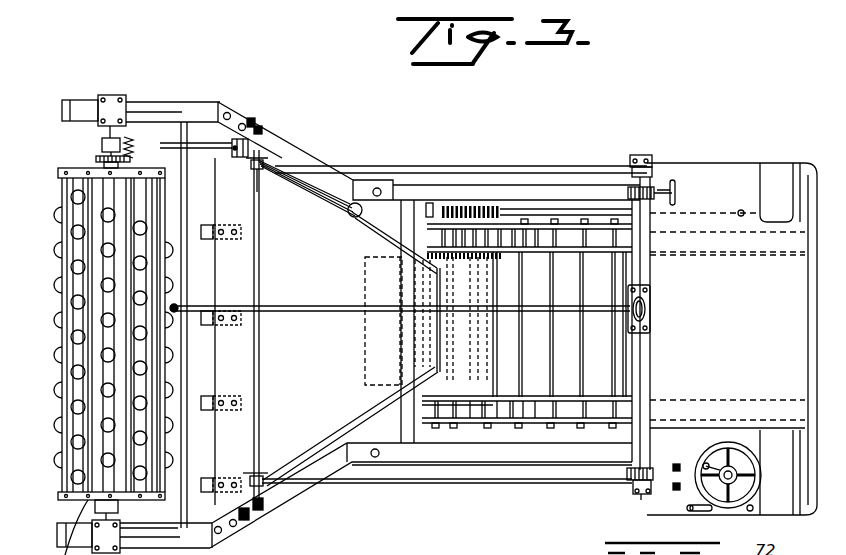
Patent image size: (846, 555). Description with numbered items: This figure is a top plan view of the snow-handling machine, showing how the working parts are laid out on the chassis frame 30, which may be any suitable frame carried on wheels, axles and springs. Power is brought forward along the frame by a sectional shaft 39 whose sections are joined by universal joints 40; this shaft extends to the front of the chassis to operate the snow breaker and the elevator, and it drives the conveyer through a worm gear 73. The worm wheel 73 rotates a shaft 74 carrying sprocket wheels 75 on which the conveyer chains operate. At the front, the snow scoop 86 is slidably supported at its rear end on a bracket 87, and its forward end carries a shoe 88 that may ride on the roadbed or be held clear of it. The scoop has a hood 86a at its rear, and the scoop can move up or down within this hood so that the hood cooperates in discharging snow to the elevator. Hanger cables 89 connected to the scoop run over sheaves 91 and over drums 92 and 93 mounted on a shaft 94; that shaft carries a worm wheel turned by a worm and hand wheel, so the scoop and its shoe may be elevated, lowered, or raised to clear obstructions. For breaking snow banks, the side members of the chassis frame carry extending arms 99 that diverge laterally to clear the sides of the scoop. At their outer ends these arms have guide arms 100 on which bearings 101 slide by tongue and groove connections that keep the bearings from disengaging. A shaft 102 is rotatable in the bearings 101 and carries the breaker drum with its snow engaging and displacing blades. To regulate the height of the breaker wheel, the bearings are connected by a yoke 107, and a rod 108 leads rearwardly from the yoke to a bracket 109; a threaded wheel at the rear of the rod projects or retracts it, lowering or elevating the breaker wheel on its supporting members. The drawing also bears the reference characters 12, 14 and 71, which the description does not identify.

The frame side member 12 is at (693, 193).
The main shaft 14 is at (683, 317).
The chassis frame 30 is at (588, 455).
The sectional shaft 39 is at (512, 207).
The universal joints 40 is at (360, 203).
The lower cross bar 71 is at (560, 422).
The worm gear 73 is at (480, 204).
The shaft 74 is at (473, 437).
The sprocket wheels 75 is at (453, 412).
The snow scoop 86 is at (255, 327).
The hood 86a is at (430, 275).
The bracket 87 is at (402, 350).
The shoe 88 is at (212, 403).
The hanger cables 89 is at (490, 476).
The sheaves 91 is at (261, 476).
The drum 92 is at (628, 163).
The drum 93 is at (628, 478).
The shaft 94 is at (653, 158).
The extending arms 99 is at (288, 148).
The guide arms 100 is at (201, 101).
The bearings 101 is at (114, 95).
The shaft 102 is at (101, 135).
The yoke 107 is at (184, 256).
The rod 108 is at (318, 312).
The bracket 109 is at (652, 297).